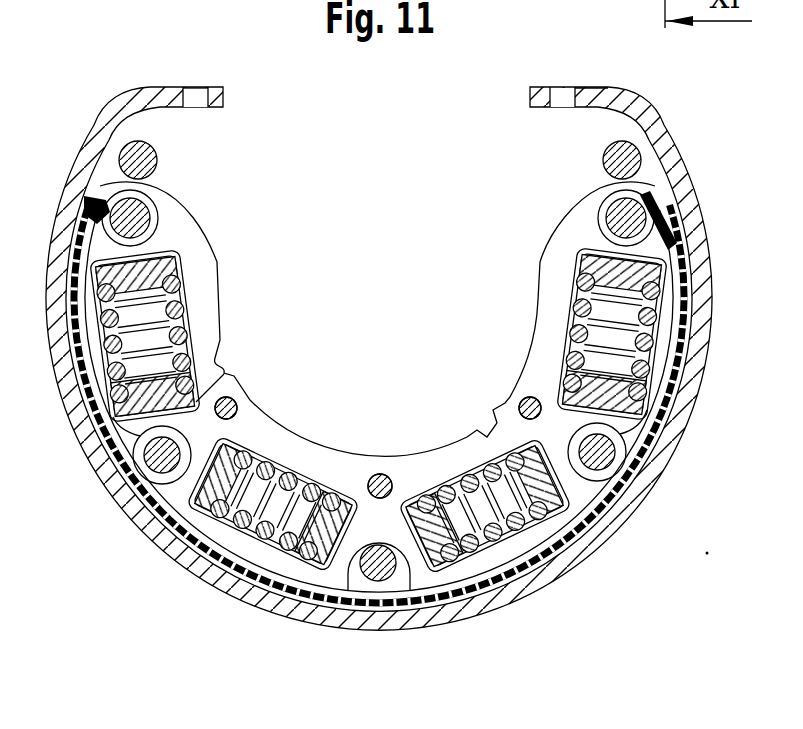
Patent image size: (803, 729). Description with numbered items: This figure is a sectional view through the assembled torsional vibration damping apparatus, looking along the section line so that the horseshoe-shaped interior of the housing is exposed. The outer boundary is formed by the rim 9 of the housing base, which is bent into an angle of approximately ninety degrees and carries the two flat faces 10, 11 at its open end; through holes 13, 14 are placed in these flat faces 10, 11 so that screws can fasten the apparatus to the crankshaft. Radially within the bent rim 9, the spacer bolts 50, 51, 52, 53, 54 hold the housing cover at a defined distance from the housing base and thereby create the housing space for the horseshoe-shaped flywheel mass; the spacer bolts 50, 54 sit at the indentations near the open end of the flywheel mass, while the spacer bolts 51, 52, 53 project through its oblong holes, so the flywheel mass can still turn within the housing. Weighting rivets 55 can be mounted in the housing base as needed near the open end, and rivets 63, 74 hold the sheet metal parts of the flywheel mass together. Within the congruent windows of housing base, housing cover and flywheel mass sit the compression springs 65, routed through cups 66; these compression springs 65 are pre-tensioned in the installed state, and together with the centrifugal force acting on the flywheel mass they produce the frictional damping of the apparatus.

The rim 9 is at (187, 553).
The flat face 10 is at (597, 87).
The flat face 11 is at (157, 87).
The through hole 13 is at (560, 92).
The through hole 14 is at (196, 92).
The spacer bolt 50 is at (148, 210).
The spacer bolt 51 is at (150, 462).
The spacer bolt 52 is at (380, 566).
The spacer bolt 53 is at (600, 453).
The spacer bolt 54 is at (614, 212).
The weighting rivet 55 is at (150, 163).
The rivet 63 is at (383, 476).
The rivet 74 is at (380, 486).
The compression spring 65 is at (182, 318).
The cup 66 is at (202, 249).